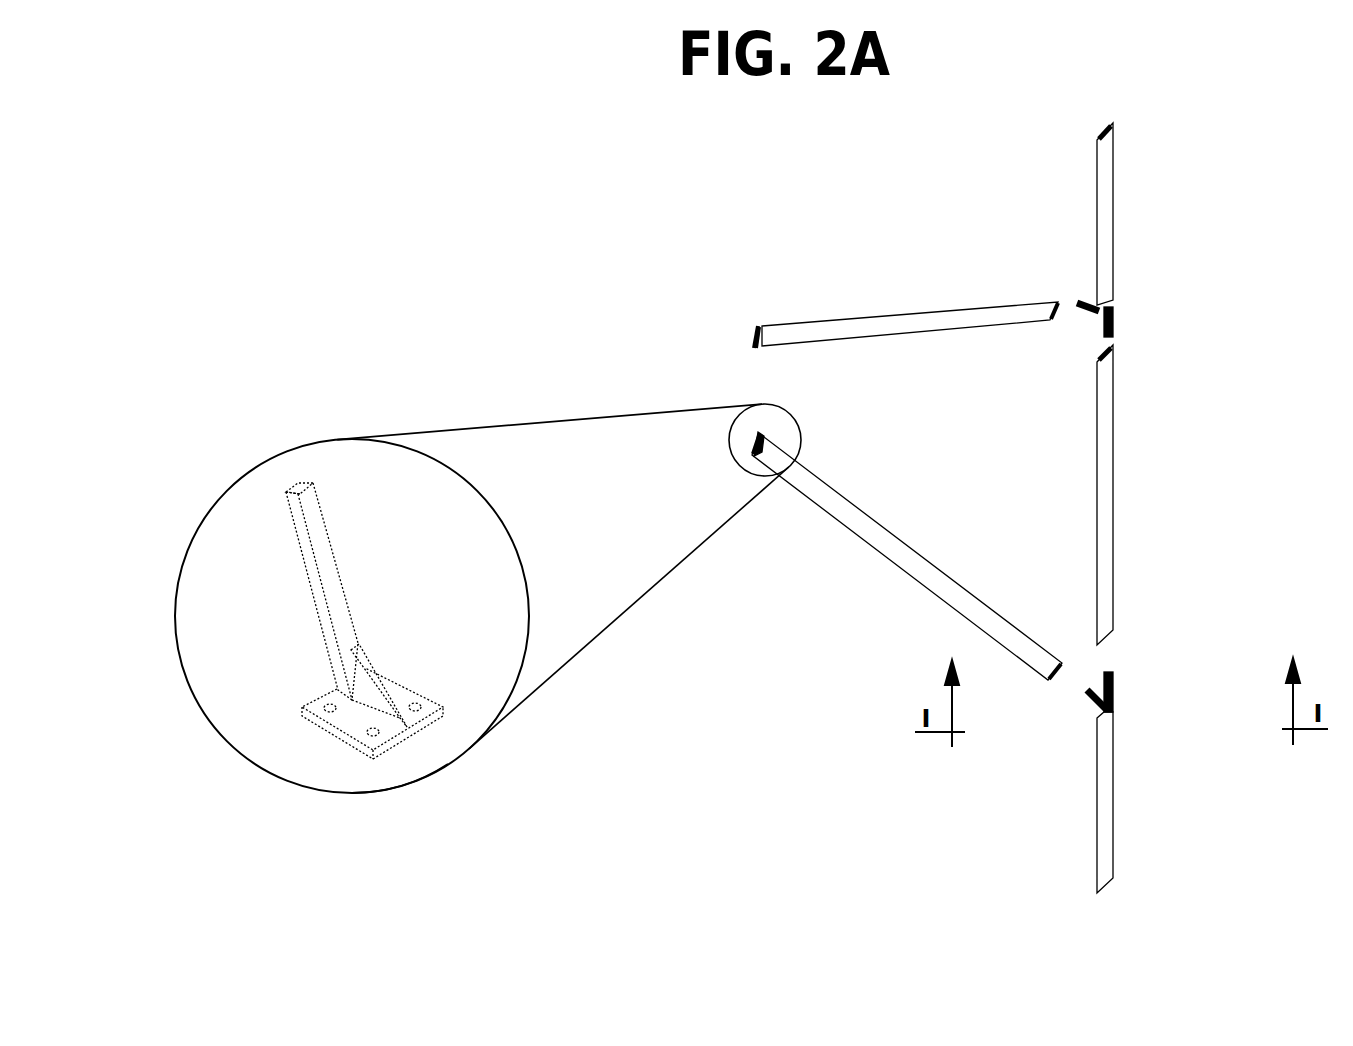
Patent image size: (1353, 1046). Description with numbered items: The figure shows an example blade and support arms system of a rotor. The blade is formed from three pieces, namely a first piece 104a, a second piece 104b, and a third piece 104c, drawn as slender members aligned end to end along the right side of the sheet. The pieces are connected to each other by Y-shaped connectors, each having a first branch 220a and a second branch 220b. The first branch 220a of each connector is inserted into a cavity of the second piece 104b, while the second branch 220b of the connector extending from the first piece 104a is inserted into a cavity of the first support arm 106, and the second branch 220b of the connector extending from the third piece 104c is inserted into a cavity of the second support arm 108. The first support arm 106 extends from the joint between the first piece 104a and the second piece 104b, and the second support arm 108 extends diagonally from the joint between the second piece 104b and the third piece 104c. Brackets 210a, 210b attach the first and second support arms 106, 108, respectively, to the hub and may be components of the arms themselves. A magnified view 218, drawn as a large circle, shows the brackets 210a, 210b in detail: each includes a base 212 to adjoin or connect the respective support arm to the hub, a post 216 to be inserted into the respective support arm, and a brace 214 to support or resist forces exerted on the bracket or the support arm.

The first piece 104a is at (1113, 212).
The second piece 104b is at (1113, 476).
The third piece 104c is at (1113, 826).
The first support arm 106 is at (863, 318).
The second support arm 108 is at (848, 530).
The bracket 210a is at (752, 348).
The bracket 210b is at (800, 438).
The base 212 is at (372, 756).
The brace 214 is at (375, 703).
The post 216 is at (292, 486).
The magnified view 218 is at (455, 767).
The first branch 220a is at (1113, 323).
The second branch 220b is at (1084, 305).